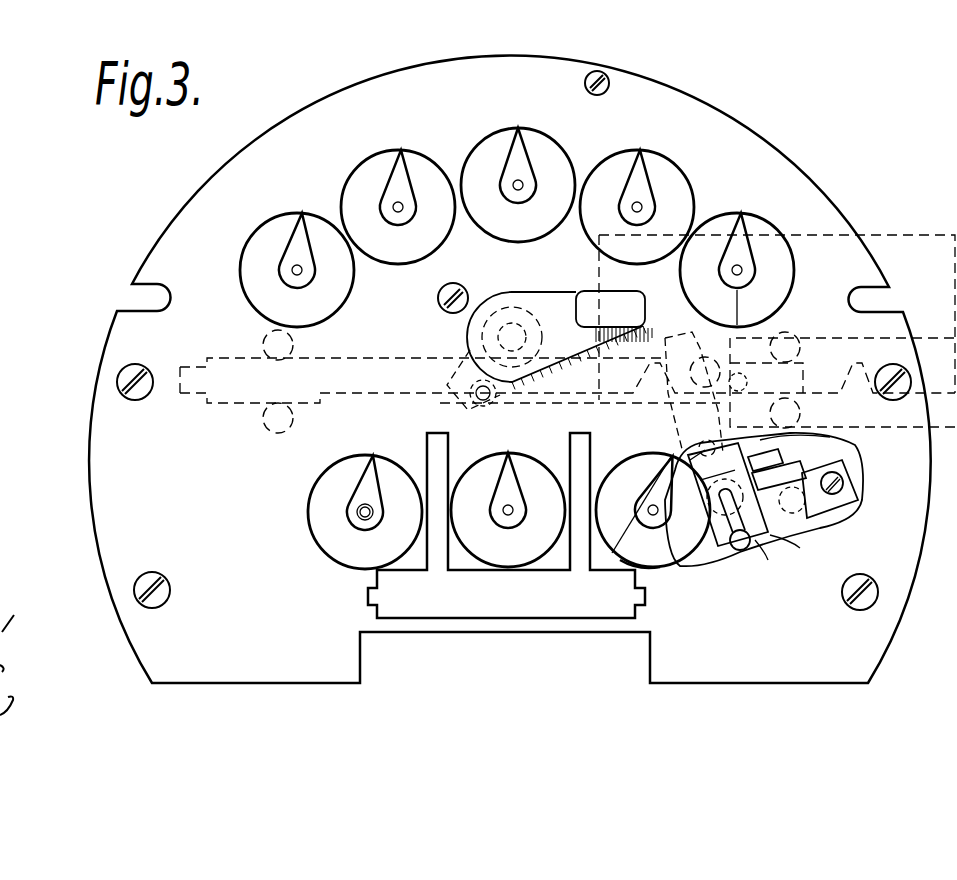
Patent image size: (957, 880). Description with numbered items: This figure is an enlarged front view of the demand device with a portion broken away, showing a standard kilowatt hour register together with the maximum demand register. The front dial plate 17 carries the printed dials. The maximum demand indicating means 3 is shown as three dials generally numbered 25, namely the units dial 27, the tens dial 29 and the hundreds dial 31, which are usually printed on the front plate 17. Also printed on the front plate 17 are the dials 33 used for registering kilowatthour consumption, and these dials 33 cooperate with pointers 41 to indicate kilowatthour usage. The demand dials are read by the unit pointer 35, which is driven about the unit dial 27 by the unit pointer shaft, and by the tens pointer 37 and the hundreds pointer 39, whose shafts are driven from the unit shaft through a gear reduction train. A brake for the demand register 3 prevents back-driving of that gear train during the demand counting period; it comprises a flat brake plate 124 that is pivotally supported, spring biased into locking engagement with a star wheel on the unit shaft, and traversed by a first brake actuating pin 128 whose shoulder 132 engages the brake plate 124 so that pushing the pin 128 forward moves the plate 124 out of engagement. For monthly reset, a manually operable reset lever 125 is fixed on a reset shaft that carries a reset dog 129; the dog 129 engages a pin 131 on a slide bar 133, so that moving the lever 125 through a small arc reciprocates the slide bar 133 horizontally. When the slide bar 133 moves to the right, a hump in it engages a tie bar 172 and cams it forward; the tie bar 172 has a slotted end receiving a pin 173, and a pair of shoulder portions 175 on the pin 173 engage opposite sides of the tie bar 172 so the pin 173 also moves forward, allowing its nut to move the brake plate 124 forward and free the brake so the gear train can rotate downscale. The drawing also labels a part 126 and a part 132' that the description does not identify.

The maximum demand indicating means 3 is at (185, 528).
The front dial plate 17 is at (847, 248).
The dials 25 is at (306, 498).
The units dial 27 is at (651, 568).
The tens dial 29 is at (520, 455).
The hundreds dial 31 is at (370, 458).
The kilowatthour dials 33 is at (690, 170).
The unit pointer 35 is at (612, 553).
The tens pointer 37 is at (504, 514).
The hundreds pointer 39 is at (372, 473).
The pointers 41 is at (742, 217).
The brake plate 124 is at (698, 566).
The reset lever 125 is at (591, 300).
The contact member 126 is at (856, 459).
The first brake actuating pin 128 is at (790, 548).
The reset dog 129 is at (499, 302).
The pin 131 is at (483, 404).
The shoulder 132 is at (848, 509).
The plate 132' is at (830, 444).
The slide bar 133 is at (350, 365).
The tie bar 172 is at (684, 452).
The pin 173 is at (735, 550).
The shoulder portions 175 is at (762, 558).